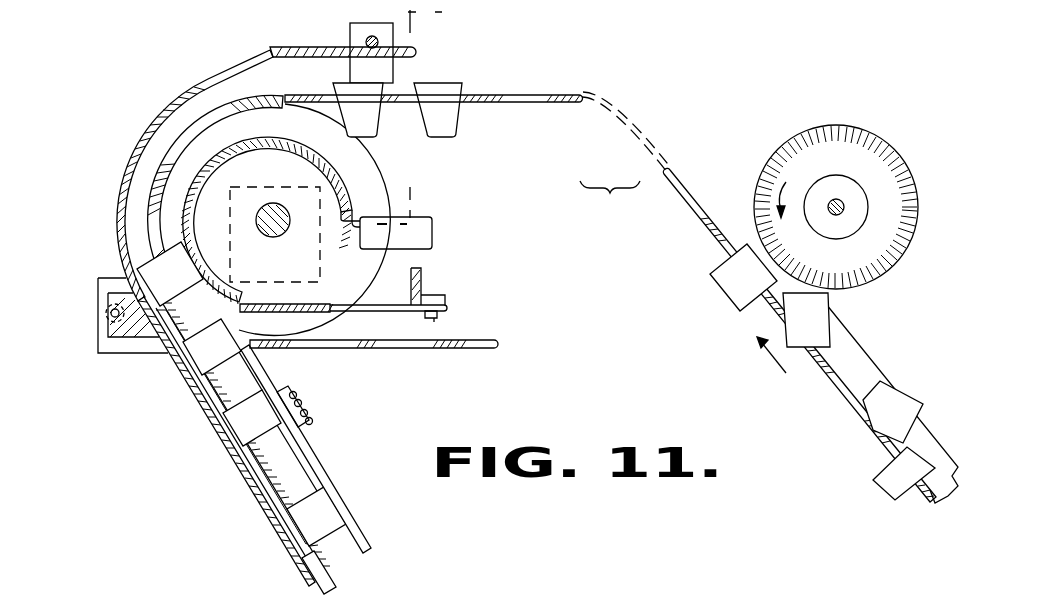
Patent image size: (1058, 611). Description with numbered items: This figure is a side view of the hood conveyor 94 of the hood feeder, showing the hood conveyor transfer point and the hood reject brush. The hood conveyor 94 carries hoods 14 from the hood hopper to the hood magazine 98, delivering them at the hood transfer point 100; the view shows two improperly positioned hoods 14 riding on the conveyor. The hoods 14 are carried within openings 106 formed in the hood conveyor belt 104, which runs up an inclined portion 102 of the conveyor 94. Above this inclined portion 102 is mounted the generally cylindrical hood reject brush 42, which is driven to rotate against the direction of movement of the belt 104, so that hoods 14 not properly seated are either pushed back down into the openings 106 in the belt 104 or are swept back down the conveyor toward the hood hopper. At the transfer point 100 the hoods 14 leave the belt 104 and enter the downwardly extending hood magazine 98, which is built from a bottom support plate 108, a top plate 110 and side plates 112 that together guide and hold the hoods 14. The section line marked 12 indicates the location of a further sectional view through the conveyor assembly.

The section line 12- 12 is at (65, 220).
The hood 14 is at (703, 293).
The hood reject brush 42 is at (834, 124).
The hood conveyor 94 is at (640, 95).
The hood magazine 98 is at (240, 495).
The hood transfer point 100 is at (114, 188).
The inclined portion 102 is at (865, 350).
The hood conveyor belt 104 is at (676, 170).
The openings 106 is at (487, 100).
The bottom support plate 108 is at (280, 527).
The top plate 110 is at (365, 553).
The side plates 112 is at (328, 577).